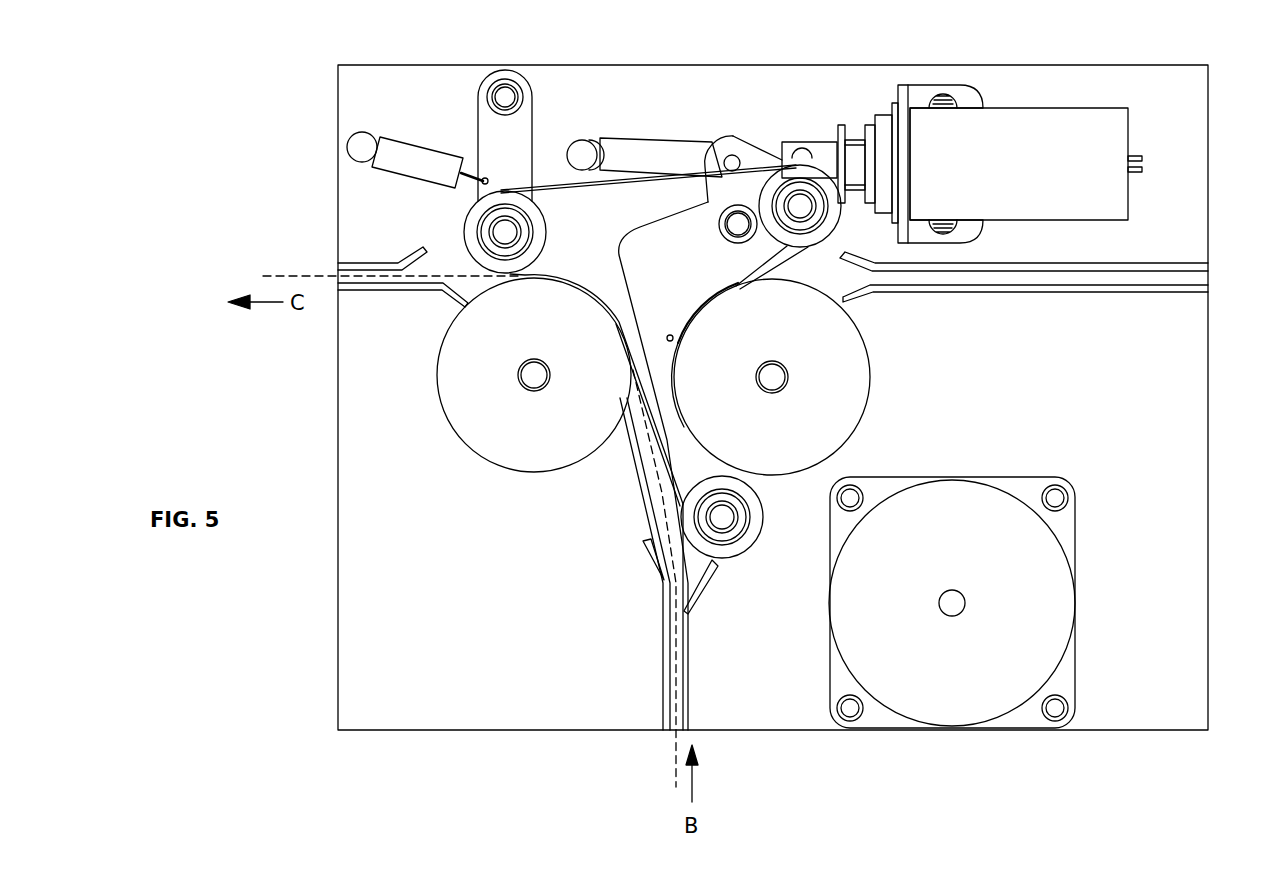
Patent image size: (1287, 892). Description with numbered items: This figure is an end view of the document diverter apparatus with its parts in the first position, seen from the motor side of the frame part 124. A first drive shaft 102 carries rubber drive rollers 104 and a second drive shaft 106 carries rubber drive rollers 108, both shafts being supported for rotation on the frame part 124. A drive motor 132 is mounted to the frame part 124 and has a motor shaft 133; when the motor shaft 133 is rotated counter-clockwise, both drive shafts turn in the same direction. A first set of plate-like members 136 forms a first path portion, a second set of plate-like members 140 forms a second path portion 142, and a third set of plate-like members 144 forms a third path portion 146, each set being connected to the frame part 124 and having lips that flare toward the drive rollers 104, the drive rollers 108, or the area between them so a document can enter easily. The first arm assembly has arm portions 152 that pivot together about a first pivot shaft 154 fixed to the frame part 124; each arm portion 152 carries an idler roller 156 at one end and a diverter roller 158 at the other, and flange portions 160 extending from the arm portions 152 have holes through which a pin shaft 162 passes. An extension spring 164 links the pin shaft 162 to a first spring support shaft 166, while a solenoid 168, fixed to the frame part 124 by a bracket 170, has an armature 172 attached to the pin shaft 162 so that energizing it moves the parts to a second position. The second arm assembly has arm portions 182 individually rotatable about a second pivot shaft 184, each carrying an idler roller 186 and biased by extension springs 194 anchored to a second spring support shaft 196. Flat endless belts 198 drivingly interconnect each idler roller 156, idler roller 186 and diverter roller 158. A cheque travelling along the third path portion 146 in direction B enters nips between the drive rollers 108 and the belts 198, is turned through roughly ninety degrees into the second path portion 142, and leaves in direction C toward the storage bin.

The first drive shaft 102 is at (770, 375).
The drive rollers 104 is at (853, 357).
The second drive shaft 106 is at (527, 373).
The drive rollers 108 is at (442, 430).
The frame part 124 is at (1209, 547).
The drive motor 132 is at (1077, 600).
The motor shaft 133 is at (948, 602).
The first set of plate-like members 136 is at (1205, 262).
The second set of plate-like members 140 is at (370, 262).
The second path portion 142 is at (283, 276).
The third set of plate-like members 144 is at (663, 668).
The third path portion 146 is at (673, 755).
The arm portions 152 is at (618, 270).
The first pivot shaft 154 is at (735, 228).
The idler rollers 156 is at (825, 222).
The diverter rollers 158 is at (738, 545).
The flange portions 160 is at (718, 138).
The pin shaft 162 is at (723, 163).
The extension spring 164 is at (638, 139).
The first spring support shaft 166 is at (582, 155).
The solenoid 168 is at (1120, 123).
The bracket 170 is at (978, 94).
The armature 172 is at (785, 142).
The arm portions 182 is at (478, 135).
The second pivot shaft 184 is at (505, 97).
The idler rollers 186 is at (478, 218).
The extension springs 194 is at (405, 177).
The second spring support shaft 196 is at (358, 140).
The flat endless belts 198 is at (577, 188).